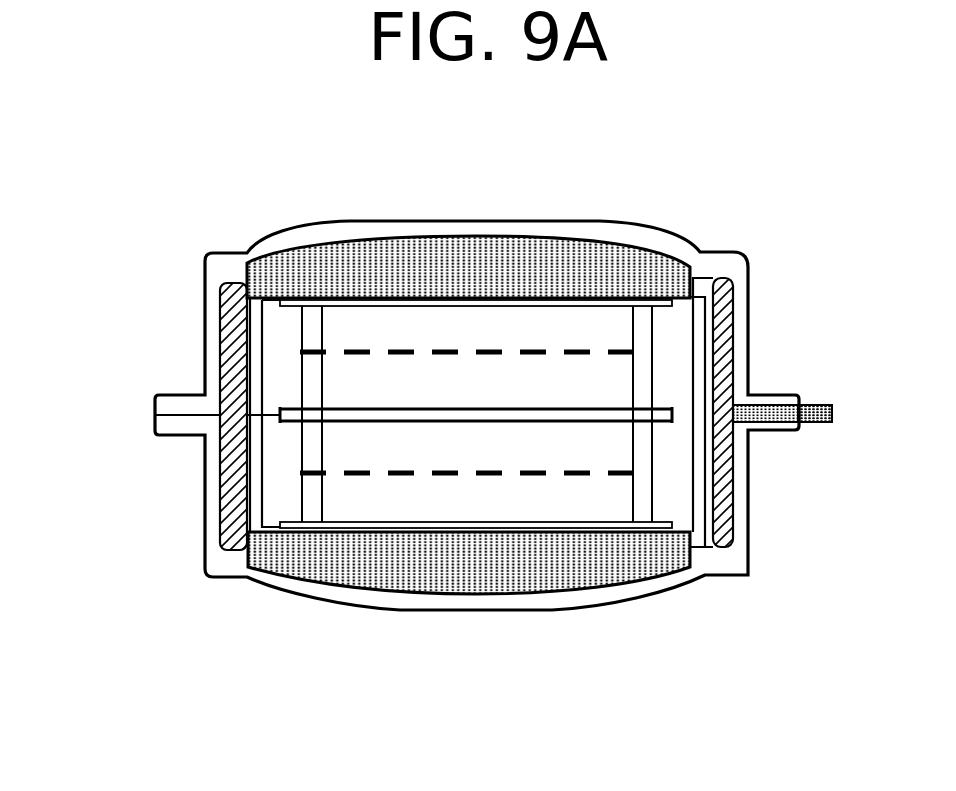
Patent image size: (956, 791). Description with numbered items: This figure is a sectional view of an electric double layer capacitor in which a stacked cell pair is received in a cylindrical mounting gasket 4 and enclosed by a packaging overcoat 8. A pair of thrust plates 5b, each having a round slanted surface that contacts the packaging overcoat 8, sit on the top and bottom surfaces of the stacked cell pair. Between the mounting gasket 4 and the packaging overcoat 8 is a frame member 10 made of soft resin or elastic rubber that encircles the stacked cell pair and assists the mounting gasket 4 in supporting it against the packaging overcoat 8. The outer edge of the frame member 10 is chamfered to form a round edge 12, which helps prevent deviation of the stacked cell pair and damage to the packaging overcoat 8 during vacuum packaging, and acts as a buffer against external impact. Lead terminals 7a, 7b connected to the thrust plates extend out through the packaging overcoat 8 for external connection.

The thrust plate 5b is at (474, 236).
The round edge 12 is at (223, 270).
The frame member 10 is at (220, 332).
The mounting gasket 4 is at (280, 372).
The packaging overcoat 8 is at (213, 473).
The lead terminal 7a is at (819, 472).
The lead terminal 7b is at (824, 425).